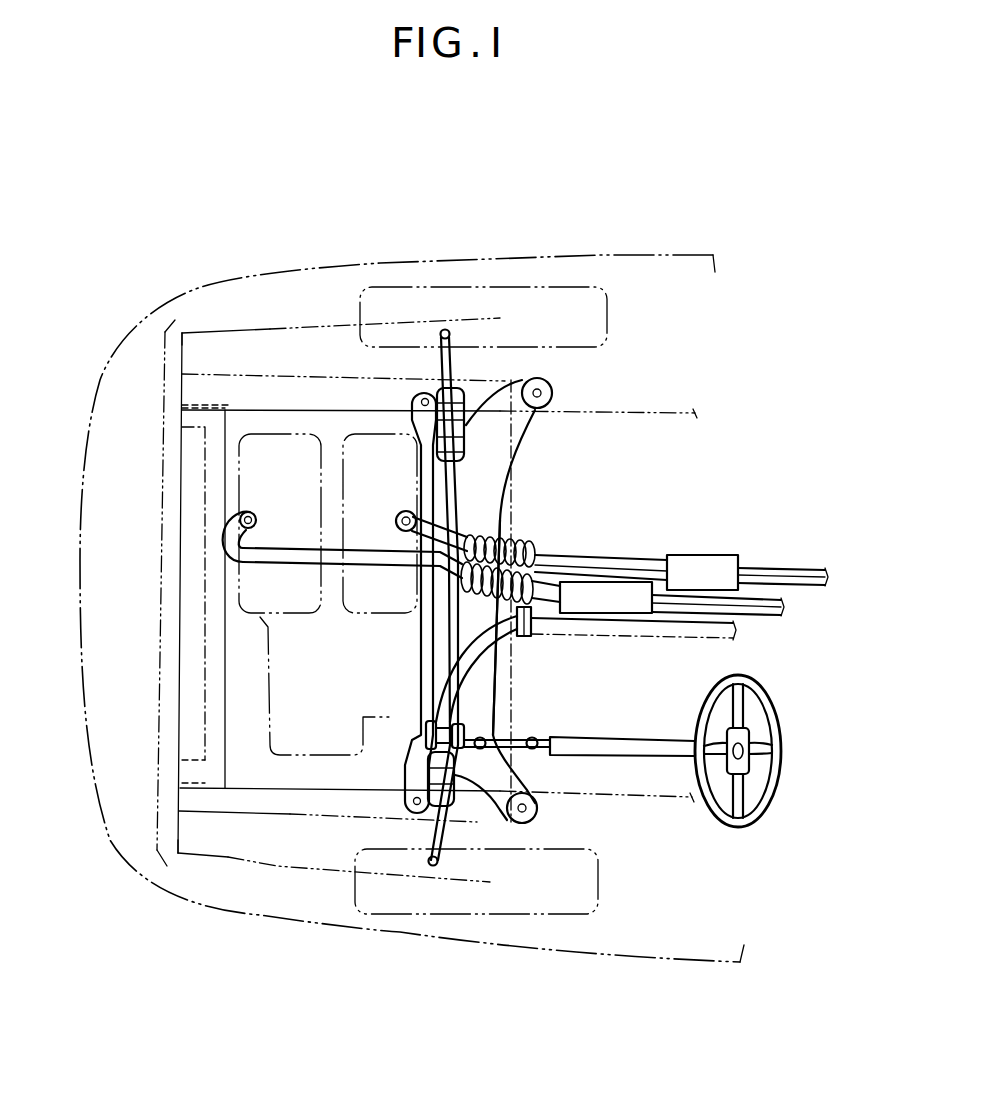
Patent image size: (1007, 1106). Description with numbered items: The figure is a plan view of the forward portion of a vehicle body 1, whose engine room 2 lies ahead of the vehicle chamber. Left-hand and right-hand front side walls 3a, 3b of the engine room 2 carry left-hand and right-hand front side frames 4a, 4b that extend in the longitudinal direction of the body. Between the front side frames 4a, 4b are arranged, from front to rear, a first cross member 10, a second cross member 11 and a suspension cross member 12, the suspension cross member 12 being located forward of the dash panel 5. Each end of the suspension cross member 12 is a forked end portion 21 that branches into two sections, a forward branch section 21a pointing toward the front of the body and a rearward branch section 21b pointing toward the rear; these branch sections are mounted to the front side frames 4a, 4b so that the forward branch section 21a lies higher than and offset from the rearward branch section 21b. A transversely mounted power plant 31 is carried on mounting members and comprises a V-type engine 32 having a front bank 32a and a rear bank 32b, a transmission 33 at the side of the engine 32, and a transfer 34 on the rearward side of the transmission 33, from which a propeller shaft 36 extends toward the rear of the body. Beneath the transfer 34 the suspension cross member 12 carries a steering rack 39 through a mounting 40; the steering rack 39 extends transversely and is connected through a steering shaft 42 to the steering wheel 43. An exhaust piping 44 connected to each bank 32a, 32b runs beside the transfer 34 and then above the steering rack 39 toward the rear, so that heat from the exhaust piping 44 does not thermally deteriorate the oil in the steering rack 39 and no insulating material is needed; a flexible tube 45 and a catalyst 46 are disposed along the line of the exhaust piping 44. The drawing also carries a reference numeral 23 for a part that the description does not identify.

The vehicle body 1 is at (572, 250).
The engine room 2 is at (232, 757).
The left-hand front side wall 3a is at (327, 337).
The right-hand front side wall 3b is at (303, 867).
The left-hand front side frame 4a is at (265, 388).
The right-hand front side frame 4b is at (233, 808).
The dash panel 5 is at (511, 490).
The first cross member 10 is at (160, 728).
The second cross member 11 is at (213, 440).
The suspension cross member 12 is at (487, 483).
The forked end portion 21 is at (560, 395).
The forward branch section 21a is at (423, 417).
The rearward branch section 21b is at (523, 418).
The step 23 is at (392, 287).
The power plant 31 is at (226, 500).
The V-type engine 32 is at (254, 472).
The front bank 32a is at (270, 440).
The rear bank 32b is at (363, 613).
The transmission 33 is at (275, 686).
The transfer 34 is at (477, 640).
The propeller shaft 36 is at (616, 635).
The steering rack 39 is at (478, 672).
The mounting 40 is at (465, 720).
The steering shaft 42 is at (536, 737).
The steering wheel 43 is at (782, 757).
The exhaust piping 44 is at (258, 562).
The flexible tube 45 is at (522, 550).
The catalyst 46 is at (712, 563).